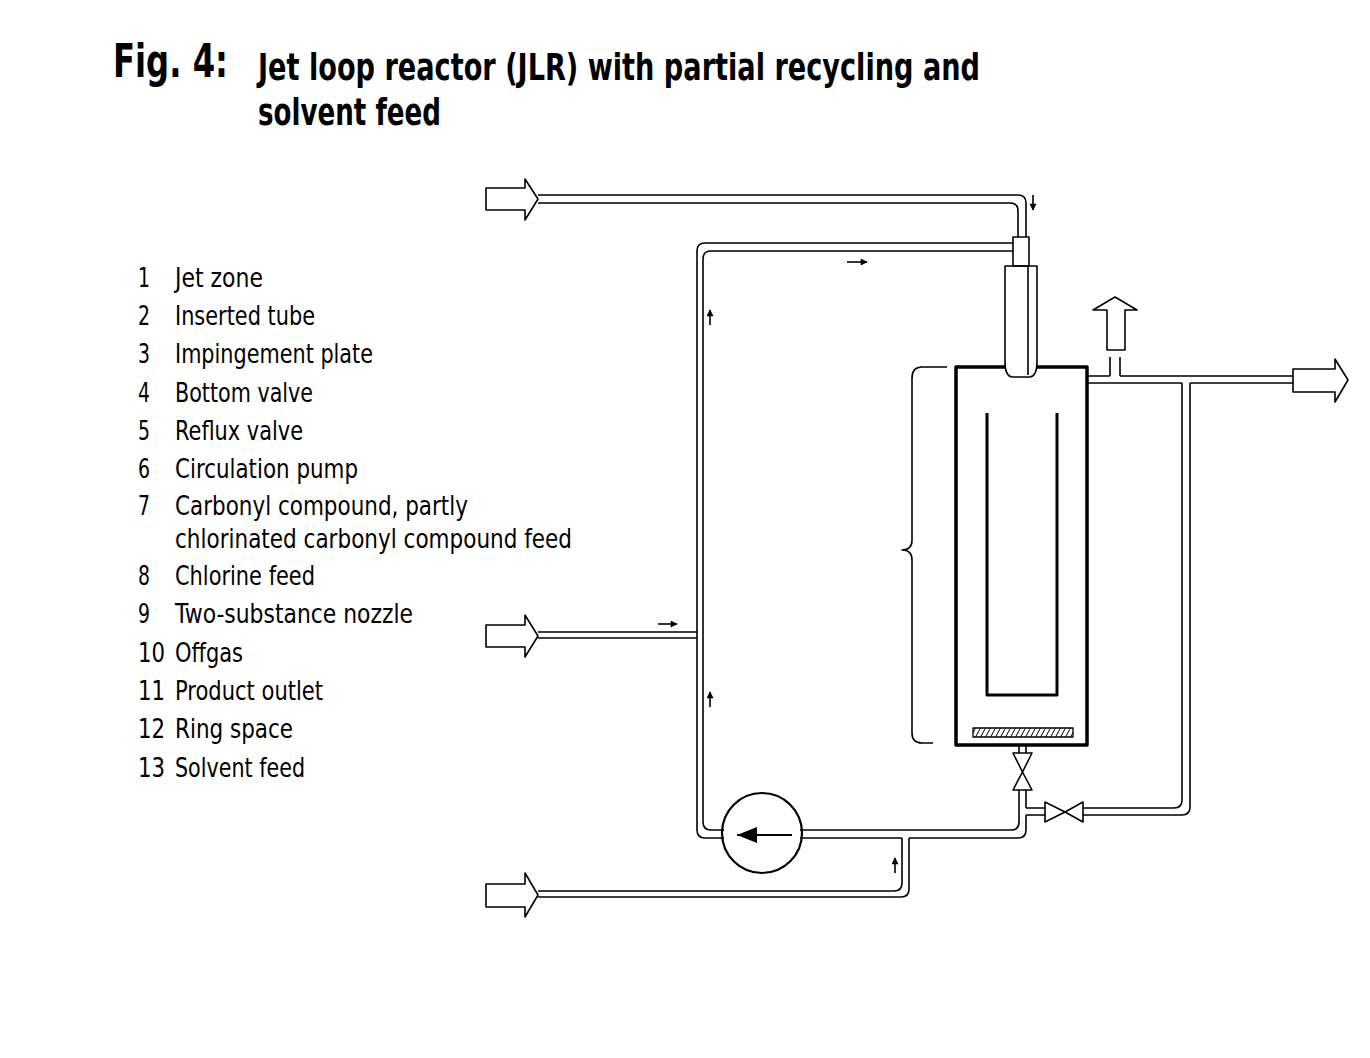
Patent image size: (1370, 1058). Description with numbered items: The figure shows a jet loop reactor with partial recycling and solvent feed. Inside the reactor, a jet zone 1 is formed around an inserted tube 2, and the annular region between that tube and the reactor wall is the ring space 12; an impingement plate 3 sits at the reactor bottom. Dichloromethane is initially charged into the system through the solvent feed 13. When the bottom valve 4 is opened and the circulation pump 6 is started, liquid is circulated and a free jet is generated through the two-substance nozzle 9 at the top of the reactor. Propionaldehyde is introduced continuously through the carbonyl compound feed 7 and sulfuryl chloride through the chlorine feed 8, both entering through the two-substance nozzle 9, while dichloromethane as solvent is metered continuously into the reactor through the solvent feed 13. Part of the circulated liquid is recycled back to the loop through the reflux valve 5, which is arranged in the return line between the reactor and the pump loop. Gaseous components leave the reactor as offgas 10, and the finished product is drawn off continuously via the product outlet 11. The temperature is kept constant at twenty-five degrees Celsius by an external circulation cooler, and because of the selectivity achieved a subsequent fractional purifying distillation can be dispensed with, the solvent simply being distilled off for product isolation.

The jet zone 1 is at (914, 555).
The inserted tube 2 is at (1057, 527).
The impingement plate 3 is at (1043, 728).
The bottom valve 4 is at (1018, 772).
The reflux valve 5 is at (1067, 813).
The circulation pump 6 is at (767, 807).
The carbonyl compound feed 7 is at (505, 890).
The chlorine feed 8 is at (503, 203).
The two-substance nozzle 9 is at (1022, 303).
The offgas 10 is at (1118, 323).
The product outlet 11 is at (1323, 385).
The ring space 12 is at (1070, 595).
The solvent feed 13 is at (505, 638).